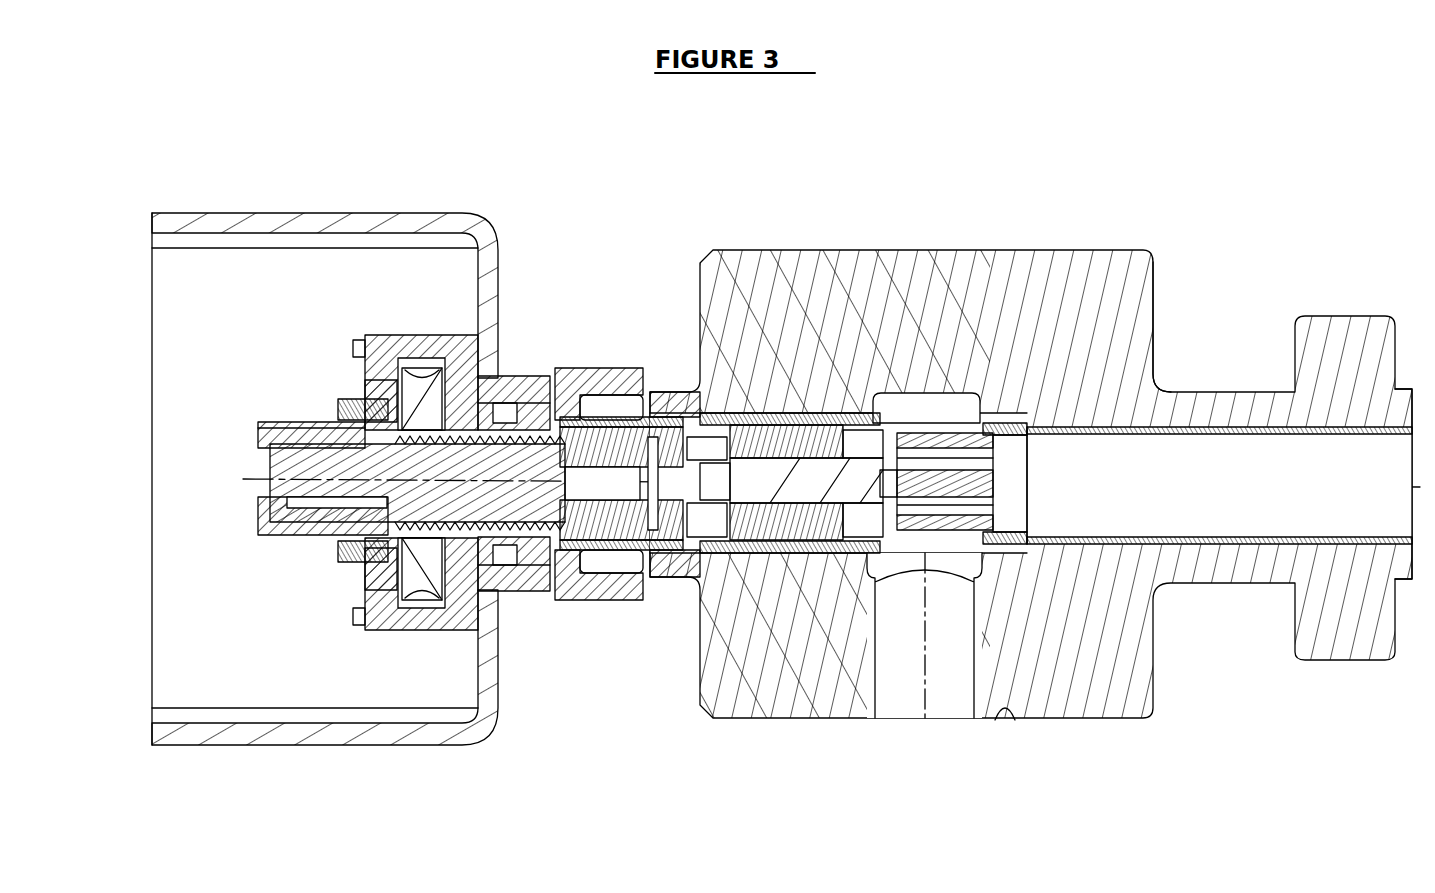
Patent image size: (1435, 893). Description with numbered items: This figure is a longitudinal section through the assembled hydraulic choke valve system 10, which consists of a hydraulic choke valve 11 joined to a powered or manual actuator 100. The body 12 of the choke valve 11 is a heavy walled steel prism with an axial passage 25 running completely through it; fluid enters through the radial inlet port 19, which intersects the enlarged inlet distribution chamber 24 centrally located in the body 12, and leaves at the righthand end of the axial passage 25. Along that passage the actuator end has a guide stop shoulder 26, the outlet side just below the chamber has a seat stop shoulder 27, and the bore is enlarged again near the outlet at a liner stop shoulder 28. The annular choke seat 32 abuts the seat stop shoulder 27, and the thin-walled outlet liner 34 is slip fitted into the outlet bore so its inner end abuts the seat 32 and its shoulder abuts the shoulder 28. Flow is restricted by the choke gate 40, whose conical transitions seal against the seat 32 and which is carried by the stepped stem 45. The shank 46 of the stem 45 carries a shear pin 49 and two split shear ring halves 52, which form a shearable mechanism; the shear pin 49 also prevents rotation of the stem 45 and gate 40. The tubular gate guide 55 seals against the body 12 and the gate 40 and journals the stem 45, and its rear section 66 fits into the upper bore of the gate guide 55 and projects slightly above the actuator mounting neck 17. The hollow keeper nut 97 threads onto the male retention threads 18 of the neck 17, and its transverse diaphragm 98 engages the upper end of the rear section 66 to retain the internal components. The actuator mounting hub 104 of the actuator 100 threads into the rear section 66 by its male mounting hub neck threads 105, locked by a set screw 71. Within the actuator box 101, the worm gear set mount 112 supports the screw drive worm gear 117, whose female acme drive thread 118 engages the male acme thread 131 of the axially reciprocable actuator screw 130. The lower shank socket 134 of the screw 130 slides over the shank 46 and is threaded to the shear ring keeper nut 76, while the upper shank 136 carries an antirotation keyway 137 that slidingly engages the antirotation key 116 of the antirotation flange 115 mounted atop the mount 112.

The hydraulic choke valve system 10 is at (1206, 215).
The hydraulic choke valve 11 is at (1060, 722).
The body 12 is at (1162, 316).
The actuator mounting neck 17 is at (643, 577).
The external male retention threads 18 is at (600, 603).
The inlet port 19 is at (888, 715).
The inlet distribution chamber 24 is at (905, 393).
The axial passage 25 is at (1166, 423).
The guide stop shoulder 26 is at (830, 712).
The seat stop shoulder 27 is at (1026, 546).
The liner stop shoulder 28 is at (1354, 550).
The choke seat 32 is at (1005, 420).
The outlet liner 34 is at (1375, 436).
The choke gate 40 is at (965, 420).
The stem 45 is at (830, 430).
The shank 46 is at (722, 545).
The shear pin 49 is at (608, 395).
The split shear ring halves 52 is at (692, 548).
The gate guide 55 is at (800, 430).
The rear section 66 is at (728, 430).
The set screw 71 is at (687, 392).
The shear ring keeper nut 76 is at (626, 378).
The keeper nut 97 is at (608, 368).
The transverse diaphragm 98 is at (556, 548).
The actuator 100 is at (497, 600).
The actuator box 101 is at (425, 390).
The actuator mounting hub 104 is at (507, 385).
The male mounting hub neck threads 105 is at (655, 392).
The worm gear set mount 112 is at (392, 380).
The antirotation flange 115 is at (284, 430).
The antirotation key 116 is at (262, 502).
The screw drive worm gear 117 is at (370, 400).
The female acme drive thread 118 is at (455, 545).
The actuator screw 130 is at (286, 470).
The male acme thread 131 is at (482, 400).
The lower shank socket 134 is at (593, 600).
The upper shank 136 is at (292, 478).
The antirotation keyway 137 is at (312, 425).